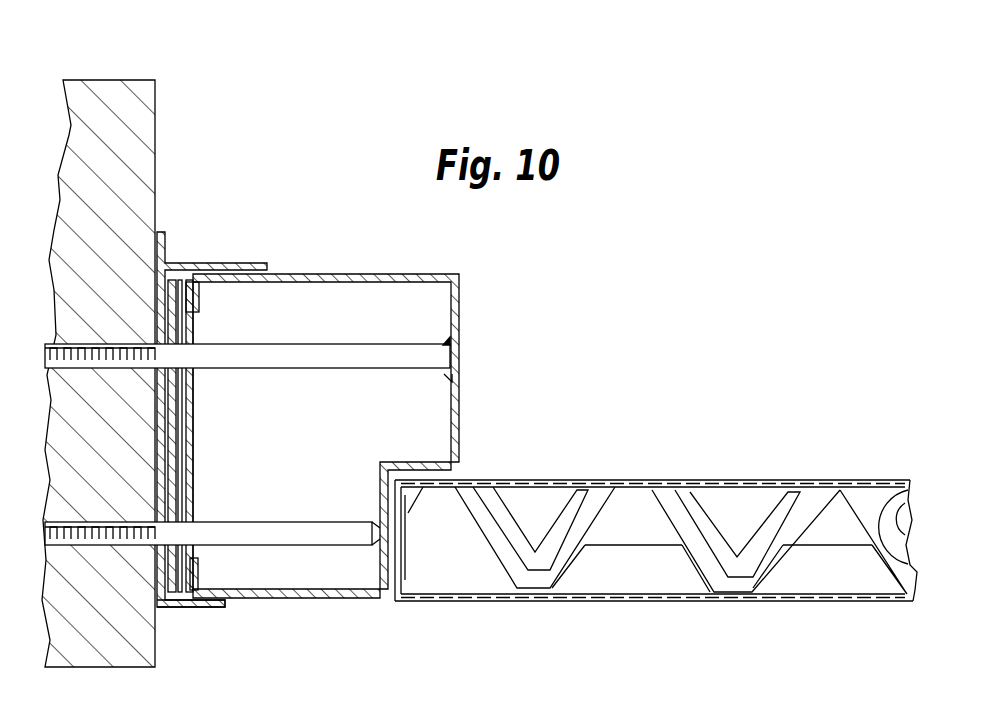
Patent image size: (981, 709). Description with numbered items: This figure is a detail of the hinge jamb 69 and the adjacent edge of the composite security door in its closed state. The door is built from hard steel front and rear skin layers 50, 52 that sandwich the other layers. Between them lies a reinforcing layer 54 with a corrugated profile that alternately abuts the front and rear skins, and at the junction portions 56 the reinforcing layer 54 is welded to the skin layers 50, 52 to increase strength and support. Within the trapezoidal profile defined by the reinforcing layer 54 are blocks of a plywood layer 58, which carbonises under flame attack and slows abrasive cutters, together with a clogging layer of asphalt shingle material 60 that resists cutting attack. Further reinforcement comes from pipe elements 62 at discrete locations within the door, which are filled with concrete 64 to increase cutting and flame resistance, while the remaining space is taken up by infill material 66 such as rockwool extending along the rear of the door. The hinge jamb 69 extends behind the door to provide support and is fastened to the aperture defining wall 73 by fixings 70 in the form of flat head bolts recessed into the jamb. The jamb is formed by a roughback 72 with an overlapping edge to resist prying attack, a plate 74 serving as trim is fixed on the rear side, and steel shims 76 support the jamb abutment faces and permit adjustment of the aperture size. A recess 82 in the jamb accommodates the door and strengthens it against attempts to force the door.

The front skin layer 50 is at (656, 533).
The rear skin layer 52 is at (549, 594).
The reinforcing layer 54 is at (672, 484).
The junction portions 56 is at (728, 601).
The plywood layer 58 is at (808, 578).
The asphalt shingle material 60 is at (490, 497).
The pipe elements 62 is at (876, 592).
The concrete 64 is at (874, 492).
The infill material 66 is at (545, 497).
The hinge jamb 69 is at (301, 266).
The fixings 70 is at (428, 357).
The roughback 72 is at (186, 604).
The aperture defining wall 73 is at (96, 92).
The plate 74 is at (168, 262).
The steel shims 76 is at (192, 334).
The recess 82 is at (413, 463).